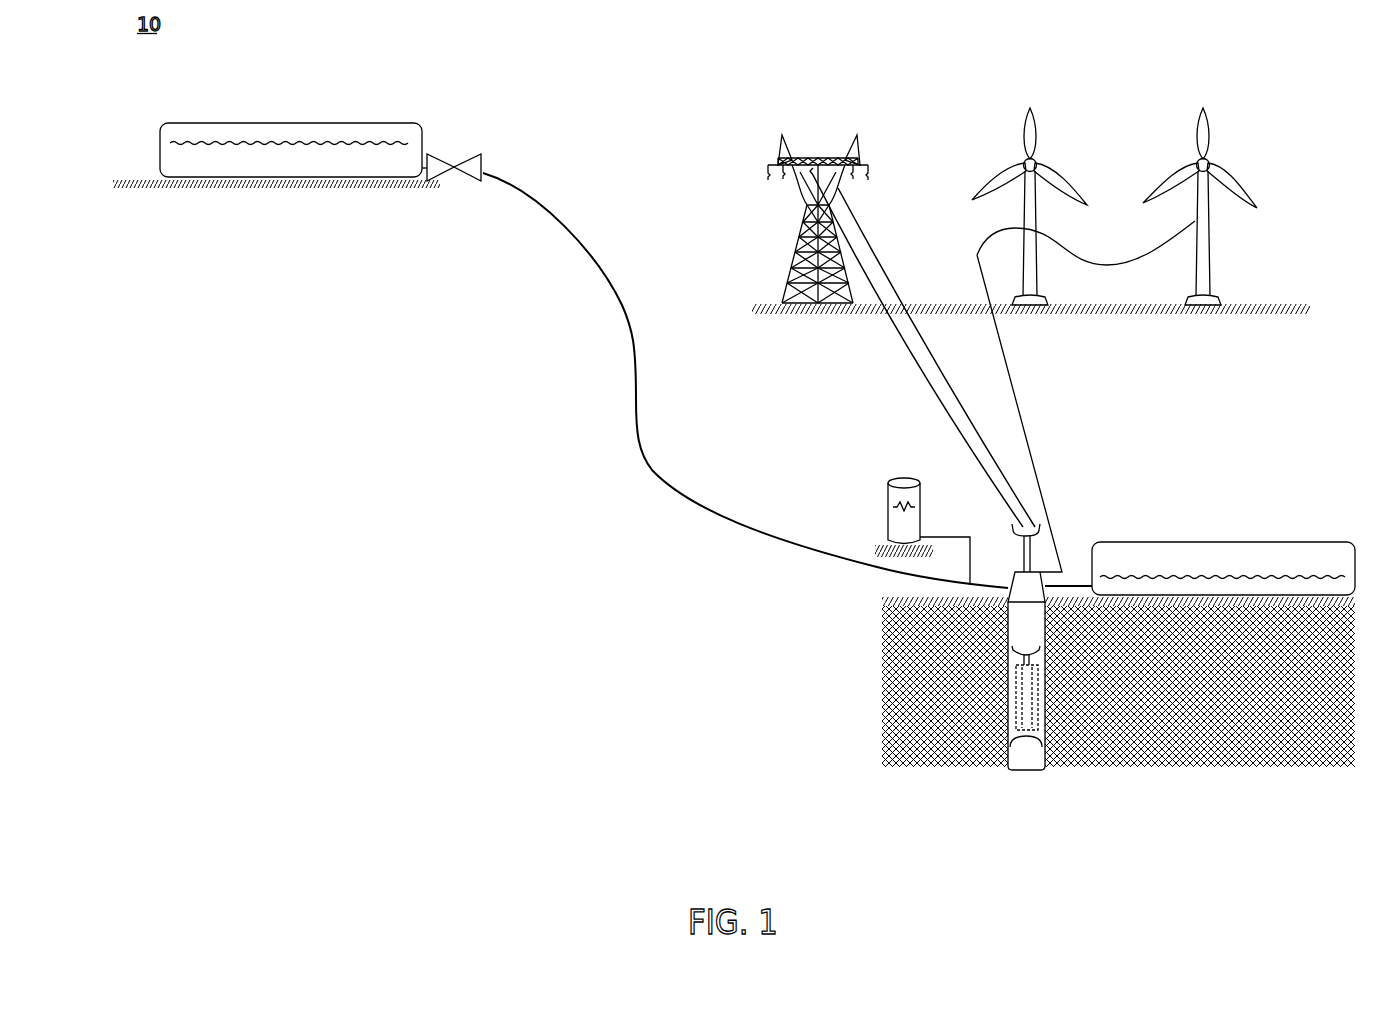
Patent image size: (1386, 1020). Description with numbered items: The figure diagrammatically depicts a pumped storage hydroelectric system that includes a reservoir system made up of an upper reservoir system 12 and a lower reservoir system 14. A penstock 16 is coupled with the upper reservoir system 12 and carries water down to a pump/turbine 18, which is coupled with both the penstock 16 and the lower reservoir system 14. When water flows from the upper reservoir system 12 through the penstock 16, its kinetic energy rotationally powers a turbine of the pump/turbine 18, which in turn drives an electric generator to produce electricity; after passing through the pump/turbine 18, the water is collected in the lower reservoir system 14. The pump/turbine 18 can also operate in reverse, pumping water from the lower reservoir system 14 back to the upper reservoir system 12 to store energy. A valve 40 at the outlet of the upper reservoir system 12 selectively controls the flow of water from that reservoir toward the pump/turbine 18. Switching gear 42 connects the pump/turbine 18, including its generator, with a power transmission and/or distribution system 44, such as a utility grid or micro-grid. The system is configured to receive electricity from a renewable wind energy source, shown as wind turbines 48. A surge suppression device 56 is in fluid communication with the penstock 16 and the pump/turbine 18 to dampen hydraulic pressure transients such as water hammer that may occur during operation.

The upper reservoir system 12 is at (308, 92).
The lower reservoir system 14 is at (1259, 509).
The penstock 16 is at (632, 365).
The pump/turbine 18 is at (1010, 698).
The valve 40 is at (468, 126).
The switching gear 42 is at (988, 527).
The power transmission and/or distribution system 44 is at (731, 169).
The wind turbines 48 is at (1136, 62).
The surge suppression device 56 is at (853, 505).